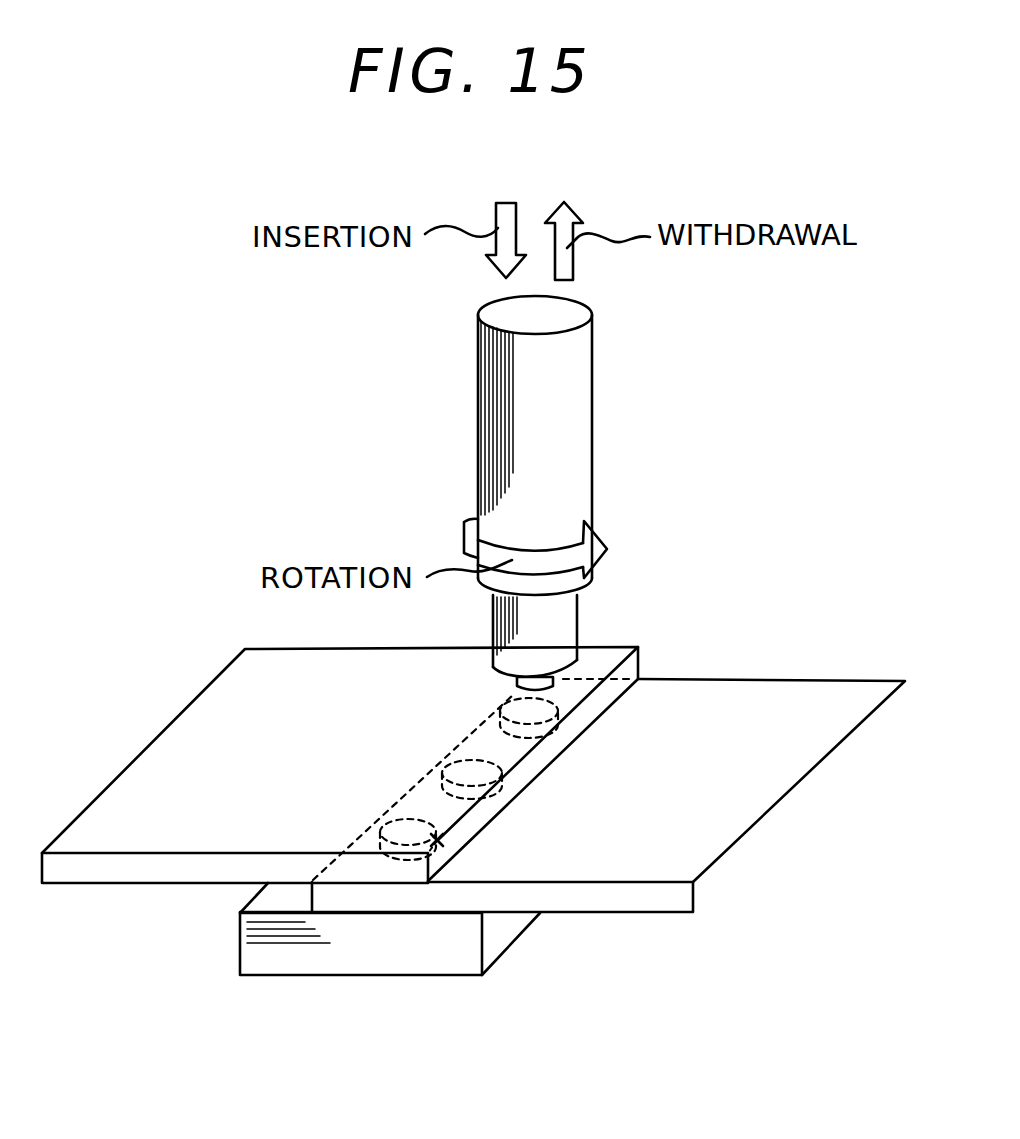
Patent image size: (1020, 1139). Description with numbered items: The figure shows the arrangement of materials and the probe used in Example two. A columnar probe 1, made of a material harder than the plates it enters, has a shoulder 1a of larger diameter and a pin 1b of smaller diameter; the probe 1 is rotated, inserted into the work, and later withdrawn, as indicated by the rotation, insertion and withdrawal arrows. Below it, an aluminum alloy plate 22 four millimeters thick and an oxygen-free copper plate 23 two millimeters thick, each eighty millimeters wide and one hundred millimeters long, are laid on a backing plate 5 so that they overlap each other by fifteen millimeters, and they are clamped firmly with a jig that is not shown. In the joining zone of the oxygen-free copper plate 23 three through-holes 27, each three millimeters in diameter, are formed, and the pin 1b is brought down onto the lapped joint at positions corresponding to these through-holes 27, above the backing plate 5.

The probe 1 is at (572, 393).
The shoulder 1a is at (542, 637).
The pin 1b is at (550, 682).
The aluminum alloy plate 22 is at (190, 733).
The oxygen-free copper plate 23 is at (615, 865).
The through-hole 27 is at (437, 840).
The backing plate 5 is at (427, 952).